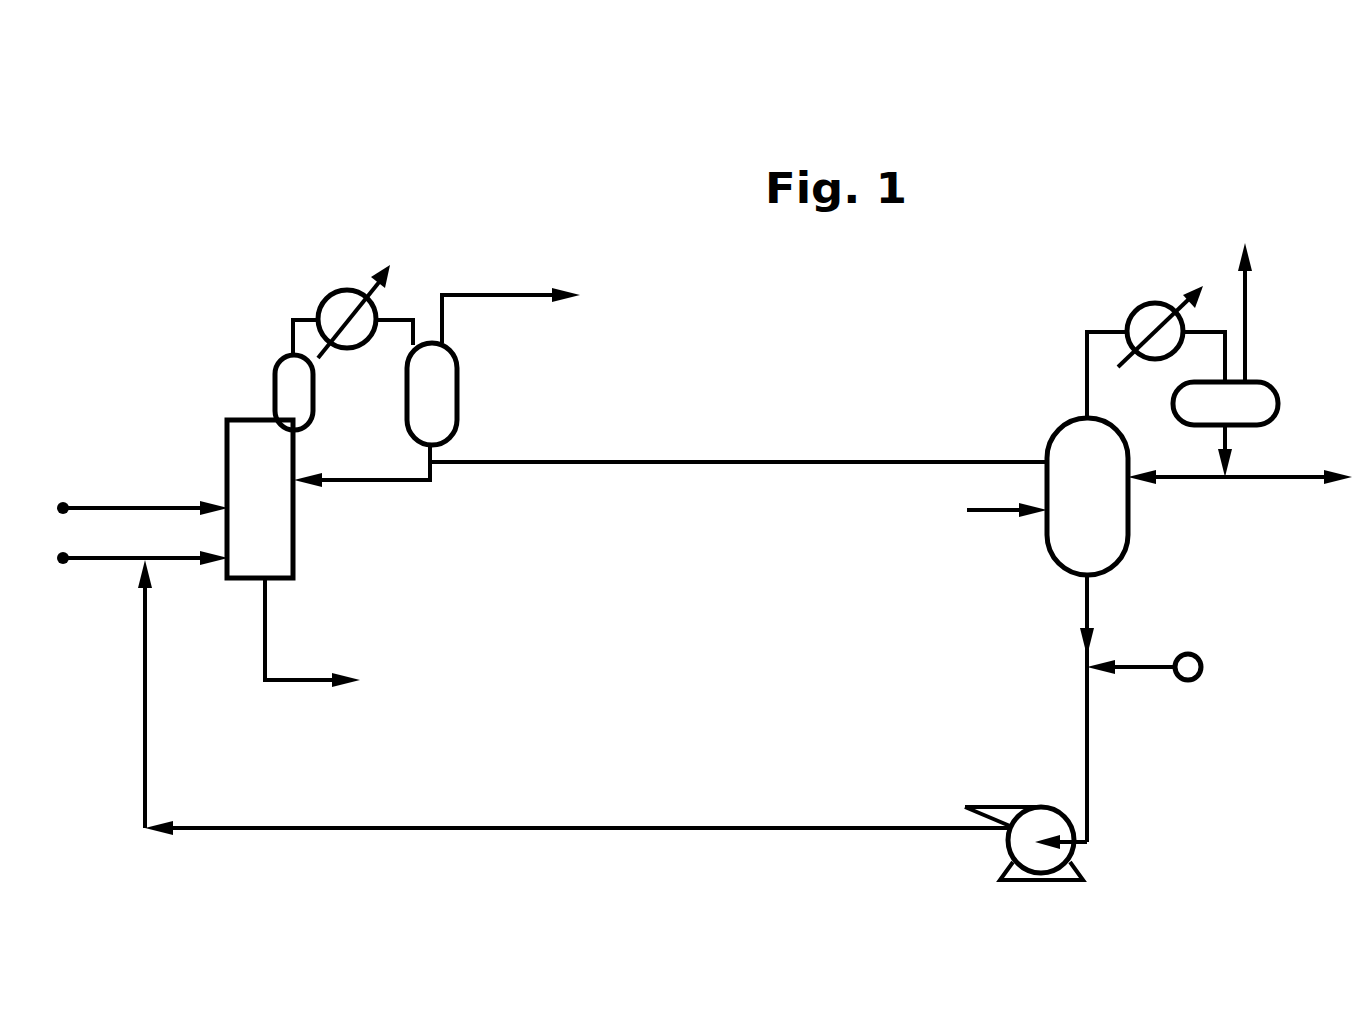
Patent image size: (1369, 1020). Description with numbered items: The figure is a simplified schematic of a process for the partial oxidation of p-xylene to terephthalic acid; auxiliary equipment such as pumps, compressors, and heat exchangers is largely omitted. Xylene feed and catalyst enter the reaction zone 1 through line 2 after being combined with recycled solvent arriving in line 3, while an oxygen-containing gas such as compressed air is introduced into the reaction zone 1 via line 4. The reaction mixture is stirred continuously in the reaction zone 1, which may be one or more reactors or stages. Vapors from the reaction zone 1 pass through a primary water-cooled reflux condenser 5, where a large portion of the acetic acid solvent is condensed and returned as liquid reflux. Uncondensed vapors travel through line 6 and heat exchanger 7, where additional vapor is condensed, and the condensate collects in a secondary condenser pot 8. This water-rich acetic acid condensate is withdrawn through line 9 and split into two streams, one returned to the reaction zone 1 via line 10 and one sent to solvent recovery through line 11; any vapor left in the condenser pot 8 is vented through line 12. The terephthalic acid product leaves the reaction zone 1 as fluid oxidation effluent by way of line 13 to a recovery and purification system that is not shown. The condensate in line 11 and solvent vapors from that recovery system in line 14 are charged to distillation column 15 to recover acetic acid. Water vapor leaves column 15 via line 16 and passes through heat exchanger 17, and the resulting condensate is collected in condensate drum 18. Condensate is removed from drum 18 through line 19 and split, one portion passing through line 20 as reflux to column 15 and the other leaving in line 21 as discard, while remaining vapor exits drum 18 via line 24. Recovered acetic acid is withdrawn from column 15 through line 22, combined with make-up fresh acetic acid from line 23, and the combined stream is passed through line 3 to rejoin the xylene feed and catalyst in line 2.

The reaction zone 1 is at (297, 547).
The line 2 is at (183, 561).
The line 3 is at (145, 697).
The line 4 is at (186, 505).
The primary water-cooled reflux condenser 5 is at (273, 385).
The line 6 is at (292, 333).
The heat exchanger 7 is at (332, 290).
The secondary condenser pot 8 is at (457, 370).
The line 9 is at (433, 455).
The line 10 is at (407, 480).
The line 11 is at (610, 462).
The line 12 is at (487, 295).
The line 13 is at (267, 637).
The line 14 is at (990, 510).
The distillation column 15 is at (1125, 557).
The line 16 is at (1083, 368).
The heat exchanger 17 is at (1148, 303).
The condensate drum 18 is at (1270, 383).
The line 19 is at (1230, 438).
The line 20 is at (1200, 477).
The line 21 is at (1293, 477).
The line 22 is at (1088, 612).
The line 23 is at (1137, 668).
The line 24 is at (1250, 302).